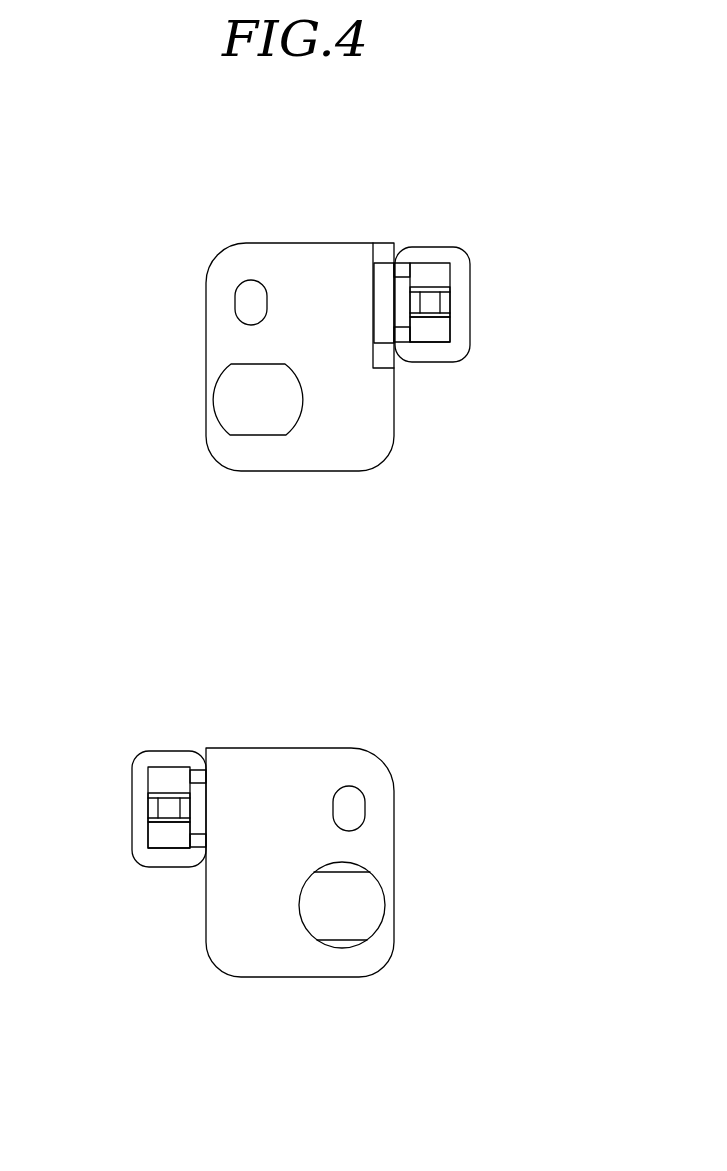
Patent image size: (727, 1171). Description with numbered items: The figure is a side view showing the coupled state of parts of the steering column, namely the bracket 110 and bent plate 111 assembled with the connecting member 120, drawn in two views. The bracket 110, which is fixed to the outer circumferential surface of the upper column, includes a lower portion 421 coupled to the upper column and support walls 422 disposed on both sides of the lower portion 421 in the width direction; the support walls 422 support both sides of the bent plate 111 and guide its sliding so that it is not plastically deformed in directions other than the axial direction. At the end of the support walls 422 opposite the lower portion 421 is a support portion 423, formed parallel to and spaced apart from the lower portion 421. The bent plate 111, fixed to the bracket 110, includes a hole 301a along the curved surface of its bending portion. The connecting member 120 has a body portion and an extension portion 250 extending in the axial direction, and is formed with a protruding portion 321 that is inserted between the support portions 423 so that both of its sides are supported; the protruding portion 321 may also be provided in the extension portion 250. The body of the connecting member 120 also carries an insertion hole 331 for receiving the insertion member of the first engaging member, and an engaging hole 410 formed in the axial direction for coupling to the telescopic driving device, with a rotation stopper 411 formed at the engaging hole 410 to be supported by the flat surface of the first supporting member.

The bracket 110 is at (312, 491).
The bent plate 111 is at (441, 331).
The connecting member 120 is at (297, 268).
The extension portion 250 is at (382, 298).
The hole 301a is at (448, 302).
The protruding portion 321 is at (402, 289).
The insertion hole 331 is at (236, 301).
The engaging hole 410 is at (292, 663).
The rotation stopper 411 is at (257, 432).
The lower portion 421 is at (465, 273).
The support wall 422 is at (442, 263).
The support portion 423 is at (403, 268).